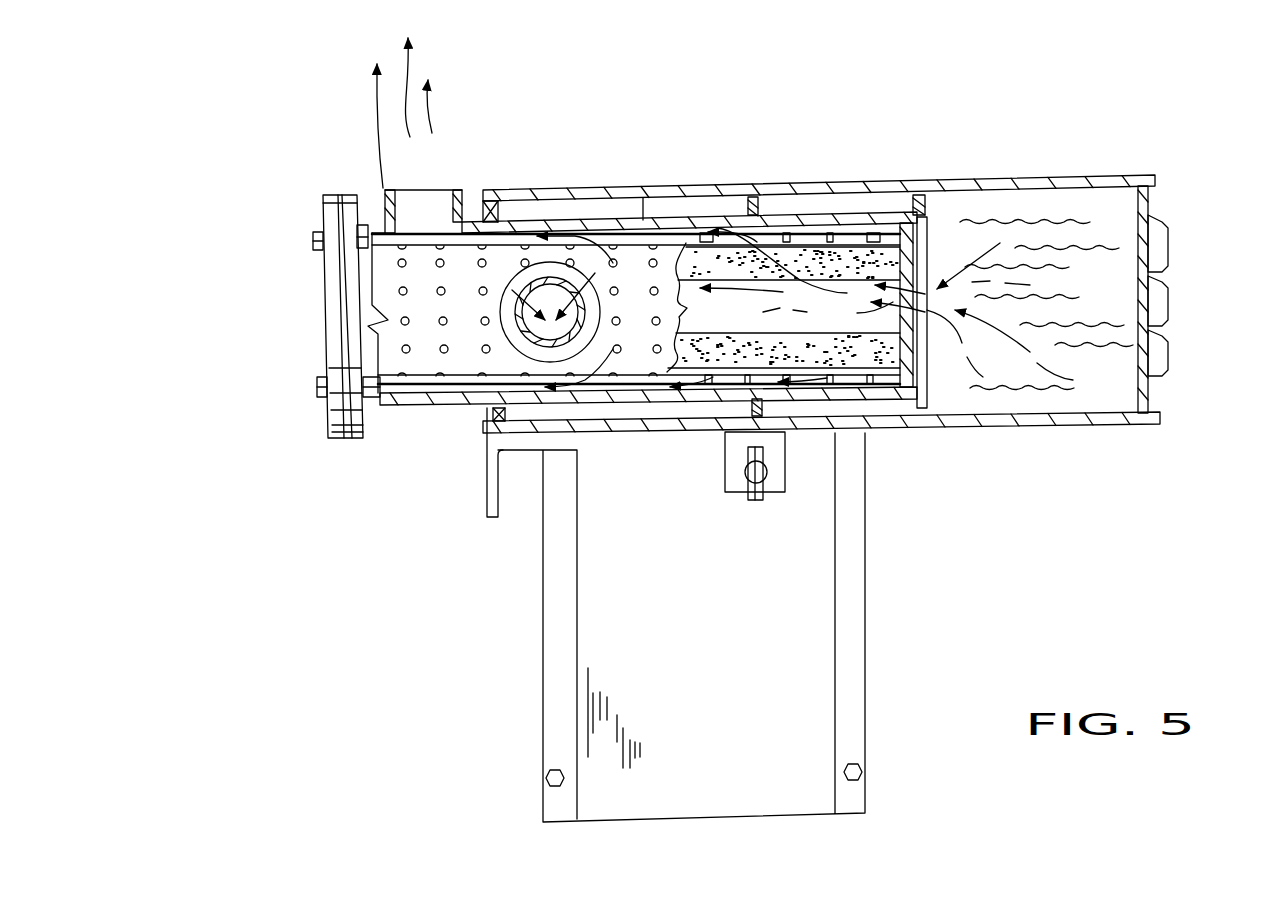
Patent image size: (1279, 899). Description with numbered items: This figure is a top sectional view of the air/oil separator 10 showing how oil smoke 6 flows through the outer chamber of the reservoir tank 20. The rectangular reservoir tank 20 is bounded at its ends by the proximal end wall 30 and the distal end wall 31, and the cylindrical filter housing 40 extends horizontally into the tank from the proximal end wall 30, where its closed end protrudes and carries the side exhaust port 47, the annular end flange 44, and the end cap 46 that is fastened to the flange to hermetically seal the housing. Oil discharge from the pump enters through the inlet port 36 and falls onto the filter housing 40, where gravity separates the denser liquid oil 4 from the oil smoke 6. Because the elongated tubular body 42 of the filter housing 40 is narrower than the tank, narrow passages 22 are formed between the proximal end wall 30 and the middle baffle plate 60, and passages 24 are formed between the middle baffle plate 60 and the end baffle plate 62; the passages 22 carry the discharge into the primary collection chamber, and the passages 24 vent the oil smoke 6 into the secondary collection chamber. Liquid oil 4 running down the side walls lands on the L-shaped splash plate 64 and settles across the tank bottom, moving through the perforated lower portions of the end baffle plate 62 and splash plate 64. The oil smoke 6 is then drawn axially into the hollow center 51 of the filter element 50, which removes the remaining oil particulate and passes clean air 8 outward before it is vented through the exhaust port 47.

The liquid oil particles 4 is at (927, 227).
The oil smoke 6 is at (805, 307).
The clean air 8 is at (404, 113).
The air/oil separator 10 is at (385, 632).
The reservoir tank 20 is at (1007, 177).
The passages 22 is at (685, 210).
The passages 24 is at (852, 203).
The proximal end wall 30 is at (483, 203).
The distal end wall 31 is at (1148, 210).
The inlet port 36 is at (510, 345).
The filter housing 40 is at (808, 210).
The tubular body 42 is at (530, 230).
The annular end flange 44 is at (350, 232).
The end cap 46 is at (330, 277).
The side exhaust port 47 is at (388, 220).
The filter element 50 is at (740, 347).
The hollow center 51 is at (725, 326).
The middle baffle plate 60 is at (743, 196).
The end baffle plate 62 is at (913, 210).
The splash plate 64 is at (592, 208).